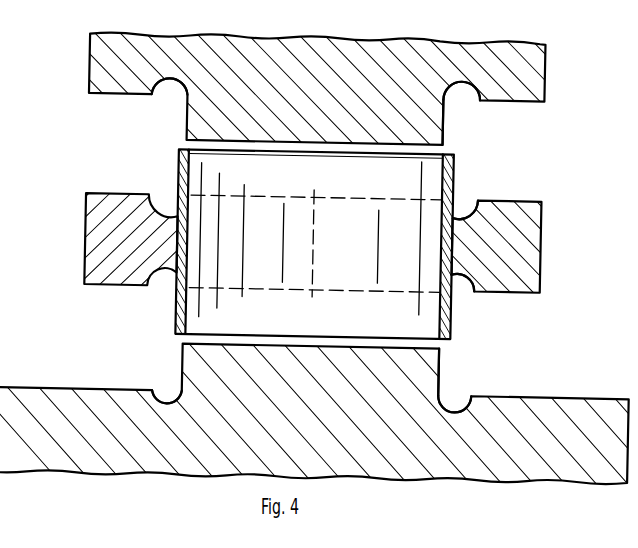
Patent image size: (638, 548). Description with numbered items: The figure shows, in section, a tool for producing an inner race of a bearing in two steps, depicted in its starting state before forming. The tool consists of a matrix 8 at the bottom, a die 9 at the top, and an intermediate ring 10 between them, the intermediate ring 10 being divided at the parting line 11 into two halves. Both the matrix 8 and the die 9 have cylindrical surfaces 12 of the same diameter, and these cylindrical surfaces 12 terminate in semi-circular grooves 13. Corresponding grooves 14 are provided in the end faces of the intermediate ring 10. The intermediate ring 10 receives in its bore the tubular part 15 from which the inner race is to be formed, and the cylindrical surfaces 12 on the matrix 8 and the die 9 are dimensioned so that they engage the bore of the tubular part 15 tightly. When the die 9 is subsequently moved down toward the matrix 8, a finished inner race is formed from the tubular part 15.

The matrix 8 is at (587, 400).
The die 9 is at (542, 78).
The intermediate ring 10 is at (540, 236).
The parting line 11 is at (314, 247).
The cylindrical surfaces 12 is at (440, 128).
The semi-circular grooves 13 is at (454, 78).
The grooves 14 is at (466, 214).
The tubular part 15 is at (443, 170).